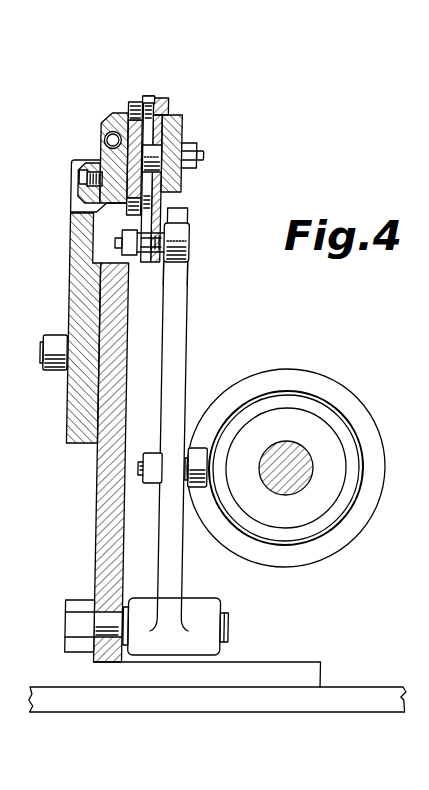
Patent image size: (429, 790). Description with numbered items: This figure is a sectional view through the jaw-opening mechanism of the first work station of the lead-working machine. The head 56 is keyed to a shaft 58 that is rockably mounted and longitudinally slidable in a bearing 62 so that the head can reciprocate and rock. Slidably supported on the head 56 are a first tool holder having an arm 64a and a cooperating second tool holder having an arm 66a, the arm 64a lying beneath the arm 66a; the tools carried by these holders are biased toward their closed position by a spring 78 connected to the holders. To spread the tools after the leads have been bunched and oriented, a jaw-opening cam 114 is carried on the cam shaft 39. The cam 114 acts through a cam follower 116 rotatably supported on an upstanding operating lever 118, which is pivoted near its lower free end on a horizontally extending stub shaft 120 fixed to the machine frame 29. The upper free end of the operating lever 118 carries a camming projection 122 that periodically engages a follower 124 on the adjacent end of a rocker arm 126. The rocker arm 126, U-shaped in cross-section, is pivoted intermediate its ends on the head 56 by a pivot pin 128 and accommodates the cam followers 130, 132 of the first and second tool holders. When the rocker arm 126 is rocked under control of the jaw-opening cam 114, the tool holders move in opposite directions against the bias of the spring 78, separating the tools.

The frame 29 is at (101, 552).
The cam shaft 39 is at (301, 488).
The head 56 is at (97, 150).
The shaft 58 is at (72, 170).
The bearing 62 is at (72, 263).
The arm 64a is at (131, 203).
The arm 66a is at (133, 98).
The spring 78 is at (109, 133).
The jaw-opening cam 114 is at (310, 382).
The cam follower 116 is at (200, 457).
The operating lever 118 is at (183, 326).
The stub shaft 120 is at (234, 622).
The camming projection 122 is at (180, 268).
The follower 124 is at (182, 233).
The rocker arm 126 is at (162, 98).
The pivot pin 128 is at (190, 147).
The cam follower 130 is at (148, 194).
The cam follower 132 is at (146, 98).